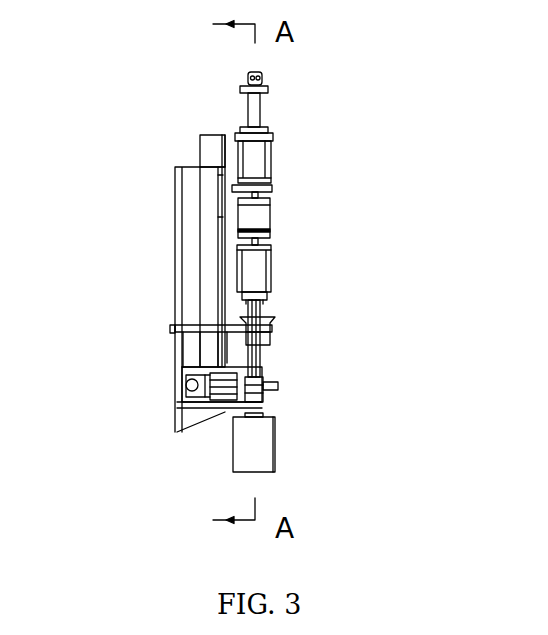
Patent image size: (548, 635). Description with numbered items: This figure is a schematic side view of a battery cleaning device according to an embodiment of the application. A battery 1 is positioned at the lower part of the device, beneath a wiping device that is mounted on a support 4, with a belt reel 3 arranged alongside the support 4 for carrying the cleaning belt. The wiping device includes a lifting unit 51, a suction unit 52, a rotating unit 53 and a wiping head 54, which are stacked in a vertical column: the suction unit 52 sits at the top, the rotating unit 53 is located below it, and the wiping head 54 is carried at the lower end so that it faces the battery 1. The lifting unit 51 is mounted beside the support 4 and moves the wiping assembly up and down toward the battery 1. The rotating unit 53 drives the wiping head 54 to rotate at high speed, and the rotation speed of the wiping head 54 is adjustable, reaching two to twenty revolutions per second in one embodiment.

The battery 1 is at (275, 423).
The belt reel 3 is at (273, 336).
The support 4 is at (178, 257).
The lifting unit 51 is at (222, 228).
The suction unit 52 is at (245, 97).
The rotating unit 53 is at (260, 220).
The wiping head 54 is at (262, 302).